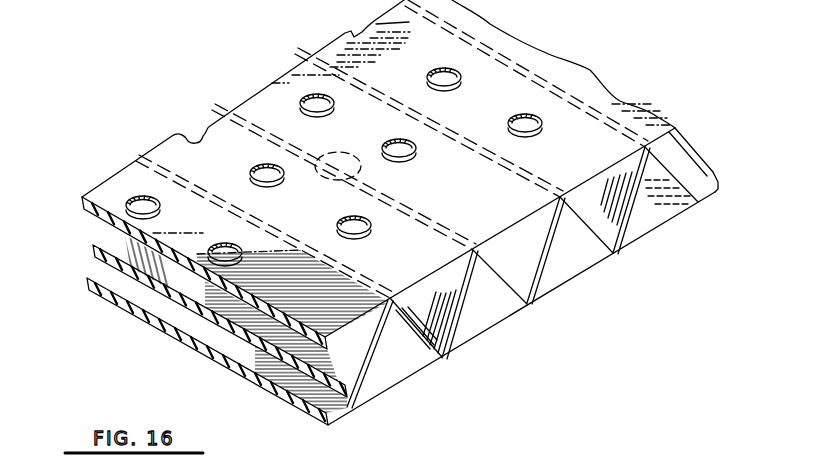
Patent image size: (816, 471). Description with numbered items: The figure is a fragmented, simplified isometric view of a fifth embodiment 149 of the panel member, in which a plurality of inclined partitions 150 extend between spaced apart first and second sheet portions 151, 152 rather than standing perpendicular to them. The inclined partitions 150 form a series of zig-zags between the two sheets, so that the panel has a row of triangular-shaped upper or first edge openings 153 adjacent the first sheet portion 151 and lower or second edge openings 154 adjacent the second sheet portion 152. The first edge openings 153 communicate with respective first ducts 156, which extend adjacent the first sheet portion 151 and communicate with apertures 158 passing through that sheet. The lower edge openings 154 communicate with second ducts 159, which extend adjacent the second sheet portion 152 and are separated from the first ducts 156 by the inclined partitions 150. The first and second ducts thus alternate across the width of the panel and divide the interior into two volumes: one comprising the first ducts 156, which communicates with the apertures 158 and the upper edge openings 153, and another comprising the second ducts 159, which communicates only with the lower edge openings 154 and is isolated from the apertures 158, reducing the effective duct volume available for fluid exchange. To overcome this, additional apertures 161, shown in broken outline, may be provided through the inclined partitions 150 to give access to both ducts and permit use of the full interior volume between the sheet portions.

The fifth embodiment of panel member 149 is at (196, 87).
The inclined partitions 150 is at (113, 244).
The first sheet portion 151 is at (606, 105).
The second sheet portion 152 is at (480, 343).
The first edge openings 153 is at (551, 210).
The second edge openings 154 is at (543, 279).
The first ducts 156 is at (598, 191).
The apertures 158 is at (137, 196).
The second ducts 159 is at (496, 303).
The additional apertures 161 is at (345, 152).